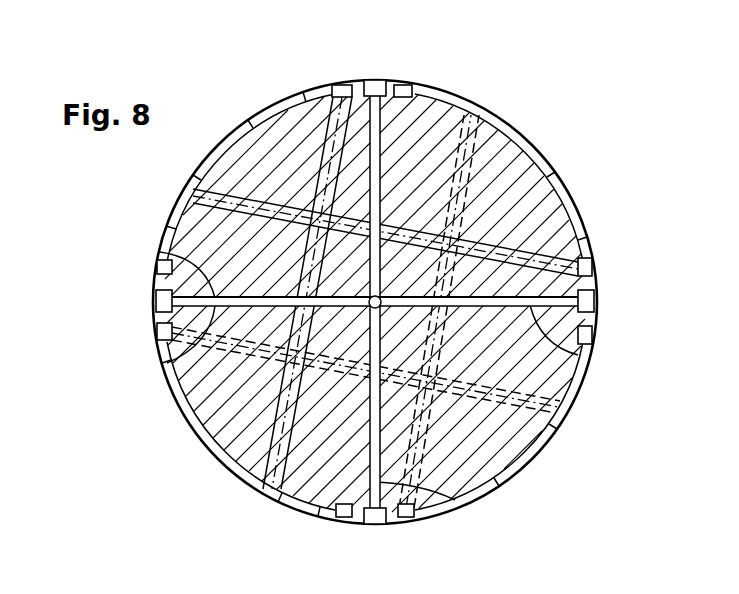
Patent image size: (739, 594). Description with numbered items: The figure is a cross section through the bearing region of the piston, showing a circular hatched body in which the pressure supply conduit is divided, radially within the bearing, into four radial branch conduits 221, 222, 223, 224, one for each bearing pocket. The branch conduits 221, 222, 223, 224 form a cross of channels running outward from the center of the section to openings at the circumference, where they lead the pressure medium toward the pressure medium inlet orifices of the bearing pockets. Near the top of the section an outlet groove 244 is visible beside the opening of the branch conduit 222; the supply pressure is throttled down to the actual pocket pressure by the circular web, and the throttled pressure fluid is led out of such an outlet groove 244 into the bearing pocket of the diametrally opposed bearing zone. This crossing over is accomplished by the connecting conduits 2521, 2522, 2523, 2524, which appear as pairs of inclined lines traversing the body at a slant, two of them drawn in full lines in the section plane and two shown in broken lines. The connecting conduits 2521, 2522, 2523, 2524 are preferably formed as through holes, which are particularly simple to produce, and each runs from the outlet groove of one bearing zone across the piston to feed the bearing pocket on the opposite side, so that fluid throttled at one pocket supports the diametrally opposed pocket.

The radial branch conduit 221 is at (158, 252).
The radial branch conduit 222 is at (392, 83).
The radial branch conduit 223 is at (573, 358).
The radial branch conduit 224 is at (470, 508).
The outlet groove 244 is at (342, 84).
The connecting conduit 2521 is at (168, 363).
The connecting conduit 2522 is at (327, 142).
The connecting conduit 2523 is at (515, 248).
The connecting conduit 2524 is at (417, 448).